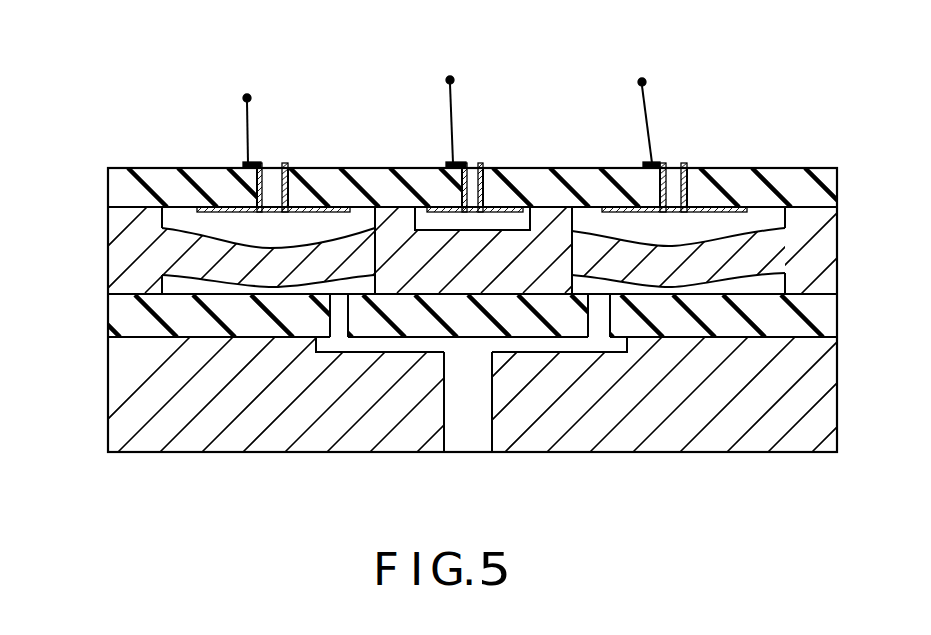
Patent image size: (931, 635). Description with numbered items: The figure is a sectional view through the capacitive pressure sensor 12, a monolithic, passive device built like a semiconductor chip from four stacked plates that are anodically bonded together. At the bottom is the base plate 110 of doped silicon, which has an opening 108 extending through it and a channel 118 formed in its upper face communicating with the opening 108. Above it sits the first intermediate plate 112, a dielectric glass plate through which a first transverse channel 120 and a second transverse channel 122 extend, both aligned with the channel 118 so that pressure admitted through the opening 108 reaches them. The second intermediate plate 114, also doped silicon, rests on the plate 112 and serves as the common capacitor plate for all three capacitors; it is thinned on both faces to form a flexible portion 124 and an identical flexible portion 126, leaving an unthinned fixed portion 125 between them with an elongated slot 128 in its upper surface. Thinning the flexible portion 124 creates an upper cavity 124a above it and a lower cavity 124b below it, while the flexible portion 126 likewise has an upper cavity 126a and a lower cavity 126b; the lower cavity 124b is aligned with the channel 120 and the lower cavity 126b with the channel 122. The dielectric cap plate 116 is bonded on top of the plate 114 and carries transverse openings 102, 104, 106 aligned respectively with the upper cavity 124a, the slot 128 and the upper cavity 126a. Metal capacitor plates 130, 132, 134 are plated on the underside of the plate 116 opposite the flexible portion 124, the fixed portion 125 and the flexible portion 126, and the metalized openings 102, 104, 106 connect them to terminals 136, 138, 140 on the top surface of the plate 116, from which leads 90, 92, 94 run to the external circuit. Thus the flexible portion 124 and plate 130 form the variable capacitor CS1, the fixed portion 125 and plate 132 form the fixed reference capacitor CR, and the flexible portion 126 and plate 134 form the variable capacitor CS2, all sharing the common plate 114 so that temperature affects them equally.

The capacitive pressure sensor 12 is at (722, 458).
The lead 90 is at (247, 130).
The lead 92 is at (452, 117).
The lead 94 is at (647, 125).
The transverse opening 102 is at (282, 167).
The transverse opening 104 is at (473, 167).
The transverse opening 106 is at (680, 167).
The opening 108 is at (465, 440).
The base plate 110 is at (828, 404).
The first intermediate plate 112 is at (827, 323).
The second intermediate plate 114 is at (825, 240).
The cap plate 116 is at (838, 181).
The channel 118 is at (462, 342).
The first transverse channel 120 is at (341, 318).
The second transverse channel 122 is at (597, 318).
The flexible portion 124 is at (207, 255).
The upper cavity 124a is at (180, 217).
The lower cavity 124b is at (172, 283).
The fixed portion 125 is at (468, 250).
The flexible portion 126 is at (823, 256).
The upper cavity 126a is at (735, 231).
The lower cavity 126b is at (773, 287).
The elongated slot 128 is at (518, 222).
The capacitor plate 130 is at (227, 216).
The capacitor plate 132 is at (448, 213).
The capacitor plate 134 is at (750, 213).
The terminal 136 is at (302, 165).
The terminal 138 is at (493, 167).
The terminal 140 is at (717, 213).
The variable capacitor CS1 is at (273, 145).
The fixed reference capacitor CR is at (473, 145).
The variable capacitor CS2 is at (677, 145).